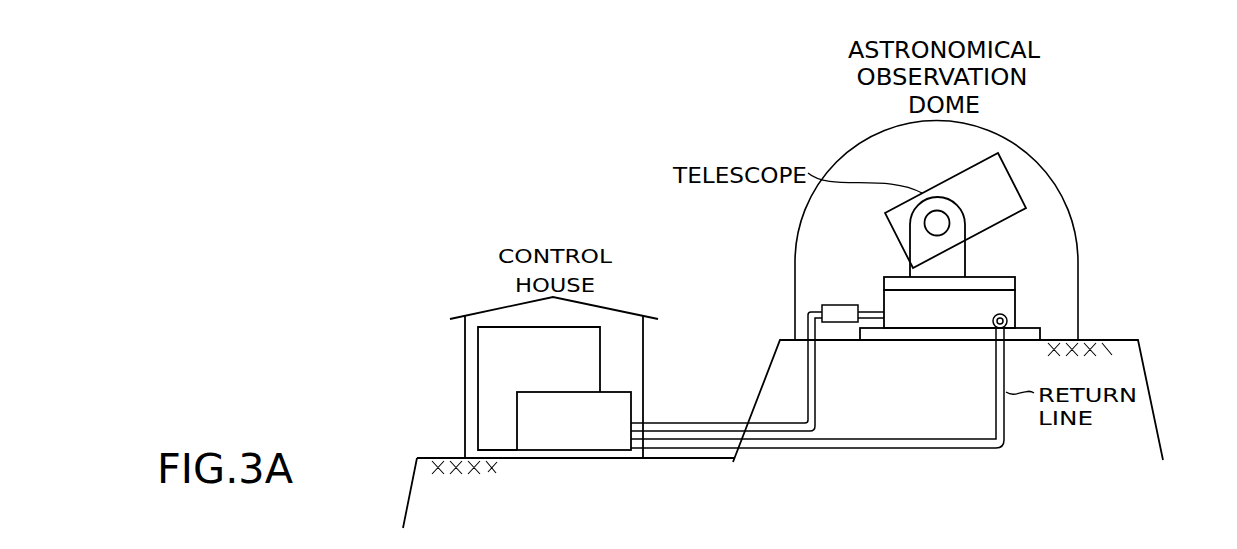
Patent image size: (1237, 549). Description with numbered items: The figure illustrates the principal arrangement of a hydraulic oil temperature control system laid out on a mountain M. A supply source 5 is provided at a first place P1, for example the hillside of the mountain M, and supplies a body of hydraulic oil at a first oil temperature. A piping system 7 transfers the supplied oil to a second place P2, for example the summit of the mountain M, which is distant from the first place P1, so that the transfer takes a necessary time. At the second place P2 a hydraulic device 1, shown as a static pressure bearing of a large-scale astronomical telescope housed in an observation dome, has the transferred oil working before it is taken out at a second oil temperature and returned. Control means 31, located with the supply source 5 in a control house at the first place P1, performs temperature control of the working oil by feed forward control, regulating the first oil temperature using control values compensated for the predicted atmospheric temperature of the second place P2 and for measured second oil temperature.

The hydraulic device 1 is at (1002, 303).
The supply source 5 is at (632, 395).
The piping system 7 is at (700, 423).
The control means 31 is at (601, 347).
The first place P1 is at (450, 393).
The second place P2 is at (1127, 221).
The mountain M is at (1153, 400).